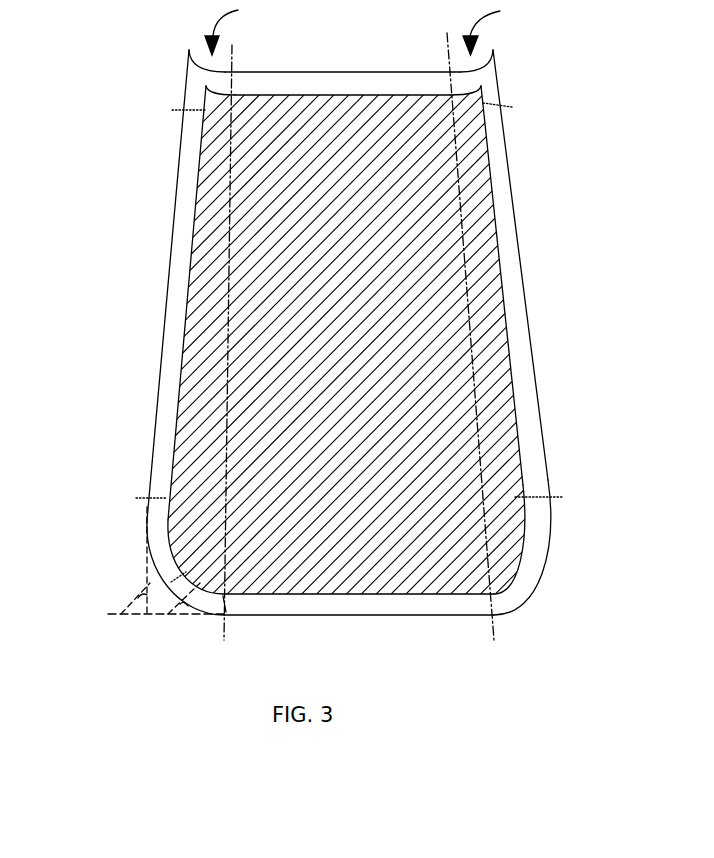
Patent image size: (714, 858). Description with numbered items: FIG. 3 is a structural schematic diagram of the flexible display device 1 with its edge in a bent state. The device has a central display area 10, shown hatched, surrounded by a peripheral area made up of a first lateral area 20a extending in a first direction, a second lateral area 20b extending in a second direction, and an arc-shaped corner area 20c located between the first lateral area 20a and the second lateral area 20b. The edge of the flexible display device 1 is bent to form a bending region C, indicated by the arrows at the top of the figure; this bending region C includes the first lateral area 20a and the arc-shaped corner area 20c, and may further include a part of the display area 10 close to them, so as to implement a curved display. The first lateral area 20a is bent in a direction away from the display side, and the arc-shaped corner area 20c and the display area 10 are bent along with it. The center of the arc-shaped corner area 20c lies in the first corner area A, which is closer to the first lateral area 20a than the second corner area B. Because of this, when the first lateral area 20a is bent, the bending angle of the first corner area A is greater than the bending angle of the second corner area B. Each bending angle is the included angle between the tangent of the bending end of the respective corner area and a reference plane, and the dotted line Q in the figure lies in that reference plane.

The flexible display device 1 is at (53, 26).
The display area 10 is at (205, 337).
The first lateral area 20a is at (183, 200).
The second lateral area 20b is at (358, 76).
The arc-shaped corner area 20c is at (200, 78).
The bending region C is at (363, 27).
The first corner area A is at (161, 508).
The second corner area B is at (228, 600).
The dotted line Q is at (153, 568).